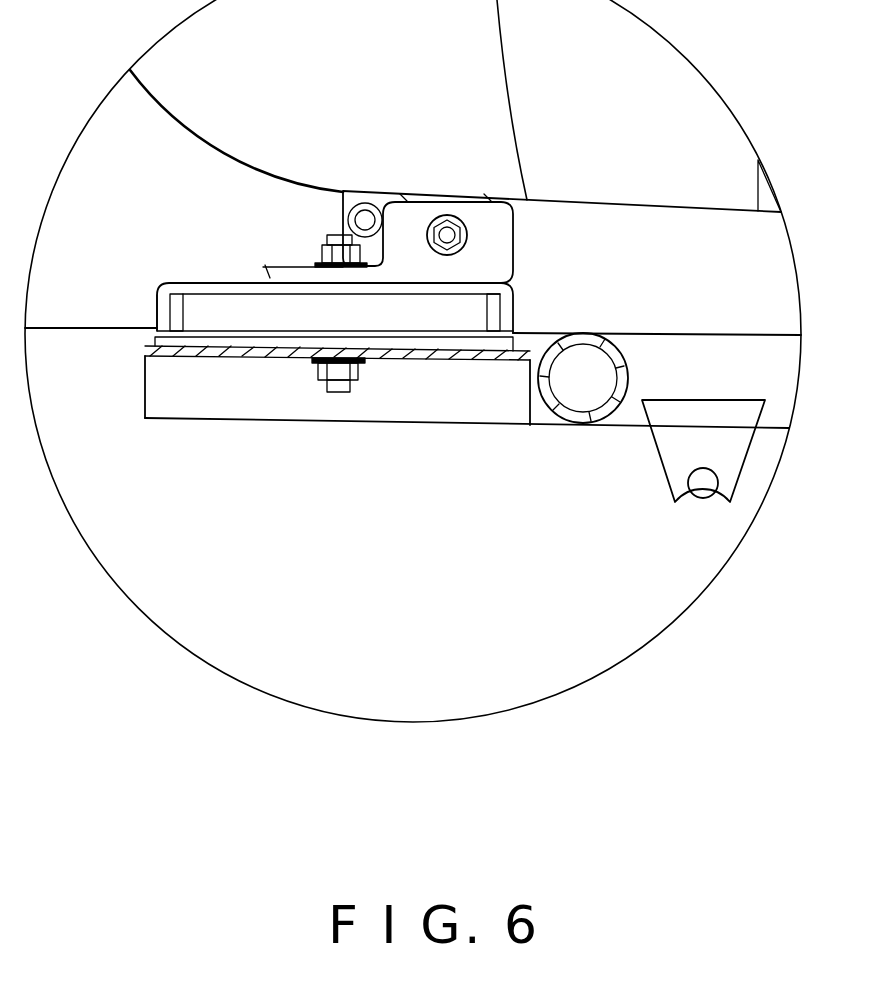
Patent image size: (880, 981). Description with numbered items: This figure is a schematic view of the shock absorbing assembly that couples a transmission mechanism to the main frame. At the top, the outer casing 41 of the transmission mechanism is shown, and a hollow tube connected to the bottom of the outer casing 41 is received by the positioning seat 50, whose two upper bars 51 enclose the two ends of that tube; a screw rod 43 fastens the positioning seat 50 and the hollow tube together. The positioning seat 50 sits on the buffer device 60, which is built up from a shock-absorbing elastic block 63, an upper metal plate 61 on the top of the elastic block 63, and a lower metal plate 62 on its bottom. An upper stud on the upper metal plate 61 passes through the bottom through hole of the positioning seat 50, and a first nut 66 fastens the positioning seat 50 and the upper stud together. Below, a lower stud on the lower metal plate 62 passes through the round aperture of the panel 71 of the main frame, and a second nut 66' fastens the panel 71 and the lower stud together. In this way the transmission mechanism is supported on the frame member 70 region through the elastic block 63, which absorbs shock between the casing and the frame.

The outer casing 41 is at (218, 118).
The screw rod 43 is at (435, 218).
The positioning seat 50 is at (273, 277).
The upper bar 51 is at (495, 233).
The buffer device 60 is at (523, 307).
The upper metal plate 61 is at (163, 307).
The lower metal plate 62 is at (193, 346).
The shock-absorbing elastic block 63 is at (233, 320).
The first nut 66 is at (317, 235).
The second nut 66' is at (373, 388).
The frame beam 70 is at (745, 357).
The panel 71 is at (473, 362).